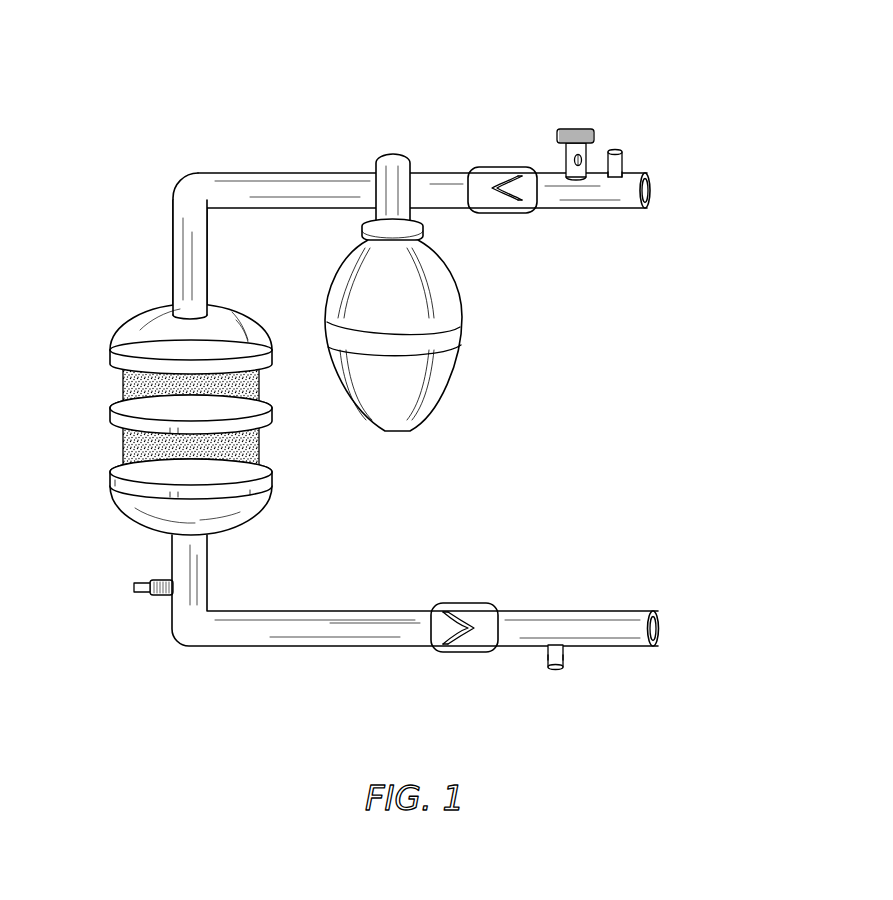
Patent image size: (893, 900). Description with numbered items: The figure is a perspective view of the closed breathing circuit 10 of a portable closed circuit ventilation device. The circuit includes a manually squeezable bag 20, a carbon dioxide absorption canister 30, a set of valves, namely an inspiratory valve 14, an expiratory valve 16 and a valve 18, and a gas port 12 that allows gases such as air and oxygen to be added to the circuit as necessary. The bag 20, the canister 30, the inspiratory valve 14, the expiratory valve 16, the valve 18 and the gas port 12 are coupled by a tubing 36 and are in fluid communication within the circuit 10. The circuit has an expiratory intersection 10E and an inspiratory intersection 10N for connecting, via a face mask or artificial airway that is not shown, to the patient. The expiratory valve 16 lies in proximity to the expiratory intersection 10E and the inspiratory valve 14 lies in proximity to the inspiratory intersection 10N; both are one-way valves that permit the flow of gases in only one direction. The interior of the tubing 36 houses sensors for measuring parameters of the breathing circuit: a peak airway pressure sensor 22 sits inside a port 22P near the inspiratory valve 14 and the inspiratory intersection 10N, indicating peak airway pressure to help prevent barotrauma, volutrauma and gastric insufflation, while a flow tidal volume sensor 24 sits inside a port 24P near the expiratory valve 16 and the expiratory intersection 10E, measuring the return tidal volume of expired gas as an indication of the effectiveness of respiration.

The circuit 10 is at (525, 57).
The expiratory intersection 10E is at (659, 144).
The inspiratory intersection 10N is at (665, 592).
The gas port 12 is at (164, 596).
The inspiratory valve 14 is at (452, 615).
The expiratory valve 16 is at (500, 178).
The valve 18 is at (578, 125).
The manually squeezable bag 20 is at (438, 378).
The peak airway pressure sensor 22 is at (560, 668).
The port 22P is at (548, 655).
The flow tidal volume sensor 24 is at (617, 151).
The port 24P is at (628, 166).
The carbon dioxide absorption canister 30 is at (162, 336).
The tubing 36 is at (306, 630).